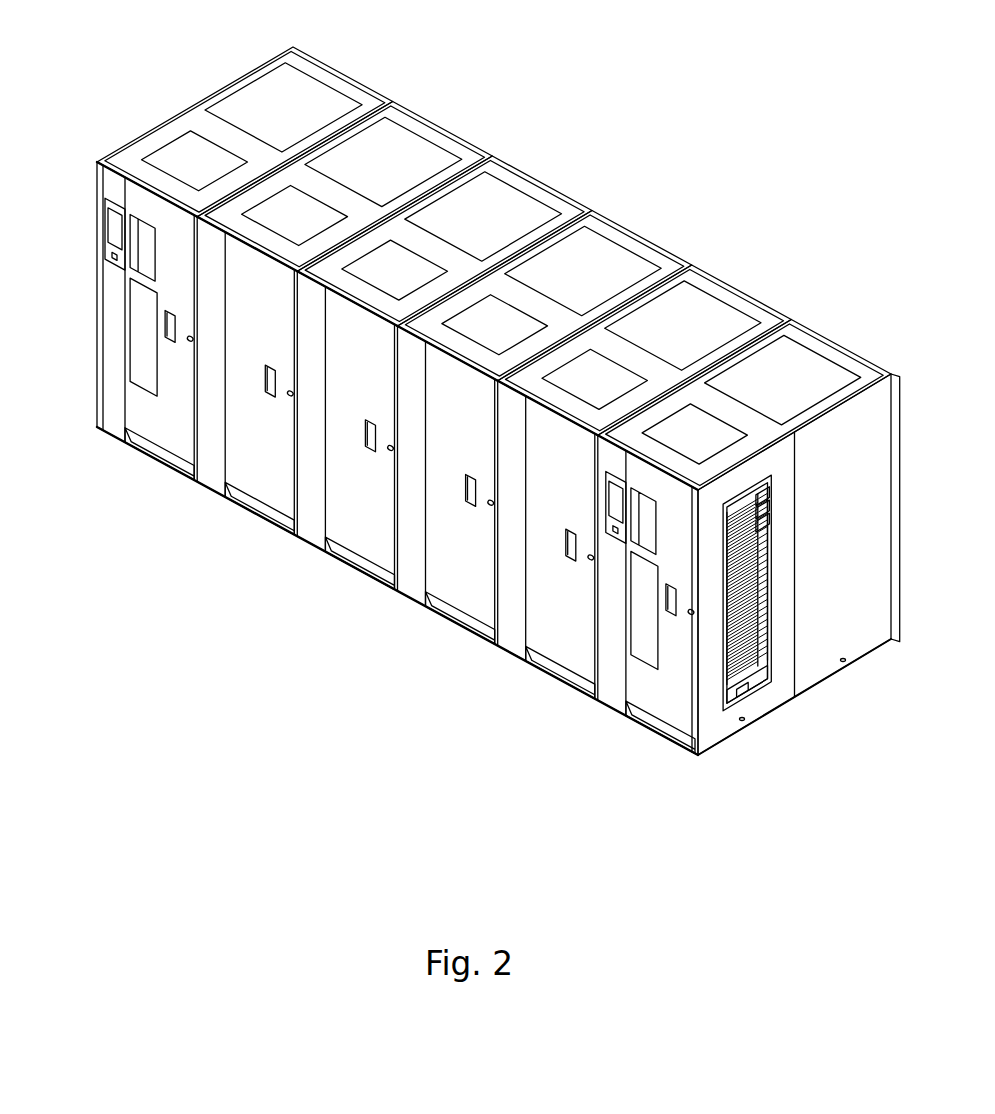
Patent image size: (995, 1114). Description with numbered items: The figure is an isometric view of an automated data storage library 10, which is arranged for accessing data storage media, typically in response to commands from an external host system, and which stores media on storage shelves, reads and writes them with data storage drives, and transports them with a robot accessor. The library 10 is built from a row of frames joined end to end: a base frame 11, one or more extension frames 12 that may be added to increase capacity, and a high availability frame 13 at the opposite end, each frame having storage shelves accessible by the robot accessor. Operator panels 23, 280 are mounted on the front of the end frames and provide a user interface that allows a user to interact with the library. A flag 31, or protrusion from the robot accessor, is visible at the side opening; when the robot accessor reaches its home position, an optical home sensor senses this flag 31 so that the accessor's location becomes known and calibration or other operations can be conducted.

The automated data storage library 10 is at (460, 399).
The base frame 11 is at (720, 533).
The extension frame 12 is at (447, 127).
The high availability frame 13 is at (206, 242).
The operator panel 23 is at (606, 489).
The operator panel 280 is at (105, 237).
The flag 31 is at (740, 690).